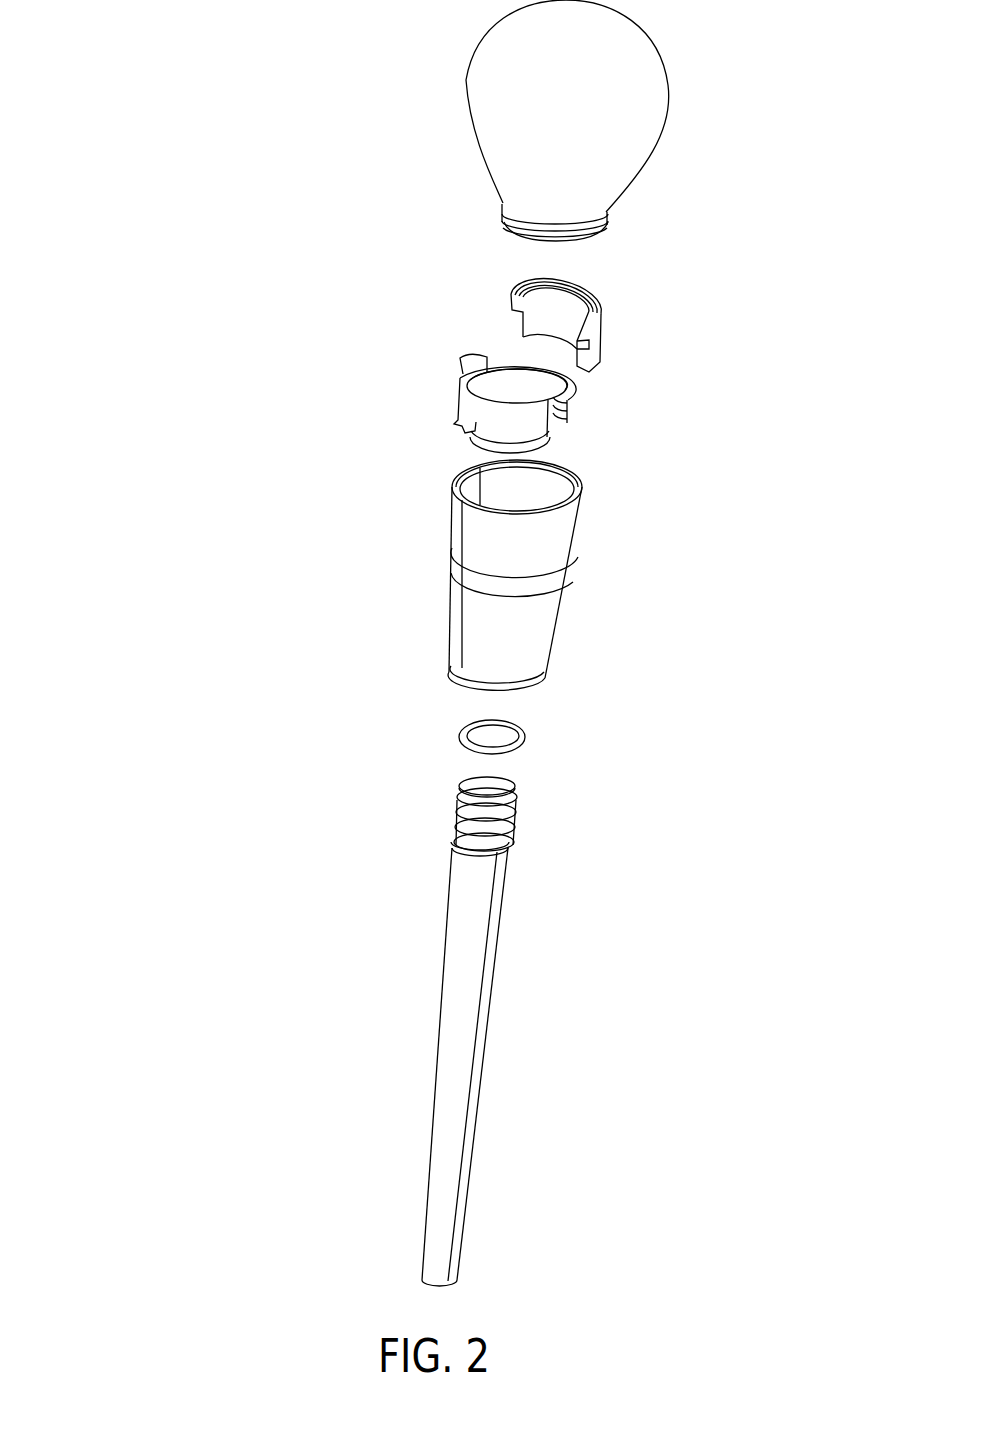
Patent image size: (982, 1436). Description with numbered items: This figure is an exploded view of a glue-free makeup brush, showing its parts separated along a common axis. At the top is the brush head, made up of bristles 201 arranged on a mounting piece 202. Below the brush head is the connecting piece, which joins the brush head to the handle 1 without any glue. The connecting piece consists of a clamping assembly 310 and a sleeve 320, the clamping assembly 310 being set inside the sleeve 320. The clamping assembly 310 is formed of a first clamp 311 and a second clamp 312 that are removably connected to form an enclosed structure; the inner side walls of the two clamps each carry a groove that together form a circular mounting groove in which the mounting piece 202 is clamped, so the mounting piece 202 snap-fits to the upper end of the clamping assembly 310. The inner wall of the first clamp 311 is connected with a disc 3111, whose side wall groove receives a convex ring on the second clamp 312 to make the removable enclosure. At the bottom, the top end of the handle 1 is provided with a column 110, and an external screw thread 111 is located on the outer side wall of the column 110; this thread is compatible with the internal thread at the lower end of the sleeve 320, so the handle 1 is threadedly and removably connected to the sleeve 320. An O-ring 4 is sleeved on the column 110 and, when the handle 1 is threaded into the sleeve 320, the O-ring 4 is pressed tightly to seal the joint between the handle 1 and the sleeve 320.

The handle 1 is at (463, 960).
The O-ring 4 is at (458, 738).
The column 110 is at (490, 789).
The external screw thread 111 is at (455, 814).
The bristles 201 is at (515, 65).
The mounting piece 202 is at (518, 227).
The clamping assembly 310 is at (422, 313).
The first clamp 311 is at (478, 404).
The disc 3111 is at (538, 386).
The second clamp 312 is at (583, 332).
The sleeve 320 is at (484, 583).